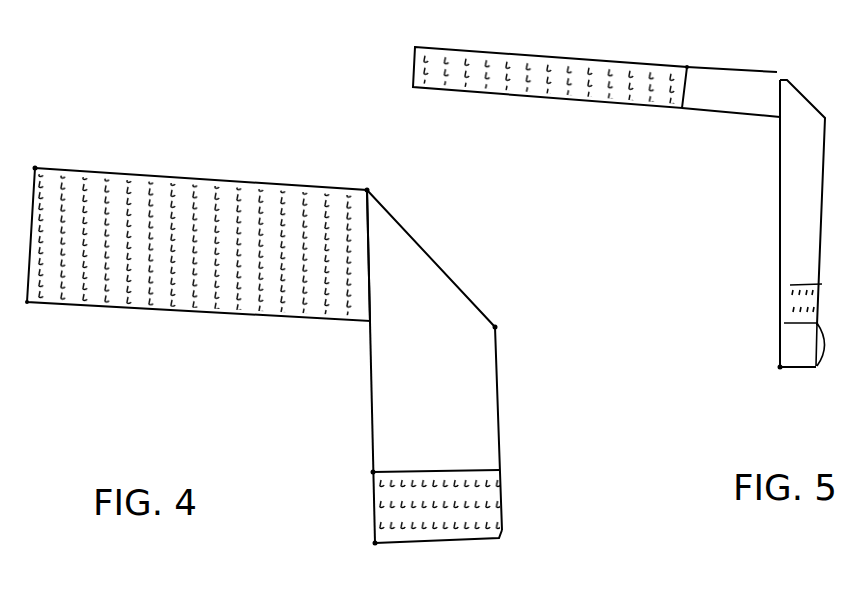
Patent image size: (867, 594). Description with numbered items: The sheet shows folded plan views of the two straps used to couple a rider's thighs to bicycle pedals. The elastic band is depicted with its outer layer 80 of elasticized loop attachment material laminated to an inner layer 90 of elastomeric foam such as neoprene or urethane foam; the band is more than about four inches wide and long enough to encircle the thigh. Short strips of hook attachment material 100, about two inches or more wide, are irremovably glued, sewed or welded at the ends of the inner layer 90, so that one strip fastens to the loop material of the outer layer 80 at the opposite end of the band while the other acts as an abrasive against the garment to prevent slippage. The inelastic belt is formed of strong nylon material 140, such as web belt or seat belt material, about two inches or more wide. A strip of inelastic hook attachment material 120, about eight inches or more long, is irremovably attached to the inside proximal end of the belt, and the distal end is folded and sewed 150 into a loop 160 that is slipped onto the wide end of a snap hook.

In FIG. 4, the outer layer 80 is at (209, 176).
In FIG. 4, the inner layer 90 is at (360, 389).
In FIG. 4, the hook attachment material 100 is at (512, 480).
In FIG. 5, the inelastic hook attachment material 120 is at (552, 98).
In FIG. 5, the nylon material 140 is at (778, 197).
In FIG. 5, the folded and sewed distal end 150 is at (778, 296).
In FIG. 5, the loop 160 is at (775, 353).